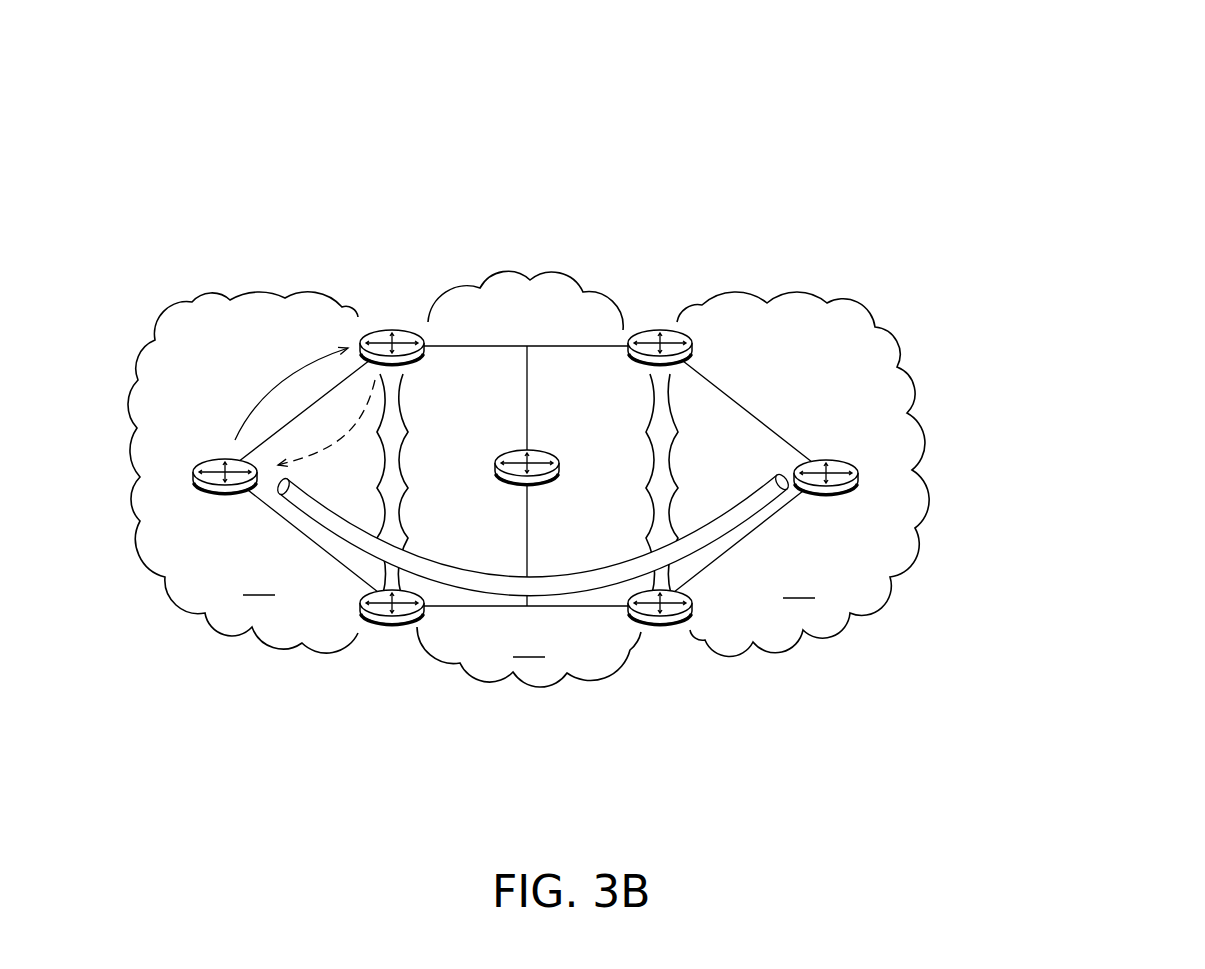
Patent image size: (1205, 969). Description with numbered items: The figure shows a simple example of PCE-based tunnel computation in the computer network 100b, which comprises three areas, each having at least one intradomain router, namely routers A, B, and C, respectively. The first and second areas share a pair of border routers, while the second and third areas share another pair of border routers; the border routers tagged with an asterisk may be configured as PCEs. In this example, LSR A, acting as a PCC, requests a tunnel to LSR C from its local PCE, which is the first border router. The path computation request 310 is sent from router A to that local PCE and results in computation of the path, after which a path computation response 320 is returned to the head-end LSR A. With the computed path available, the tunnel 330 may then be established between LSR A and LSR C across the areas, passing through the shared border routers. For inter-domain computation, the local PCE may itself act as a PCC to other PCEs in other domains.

The computer network 100b is at (655, 363).
The path computation request 310 is at (286, 368).
The path computation response 320 is at (317, 457).
The tunnel 330 is at (623, 562).